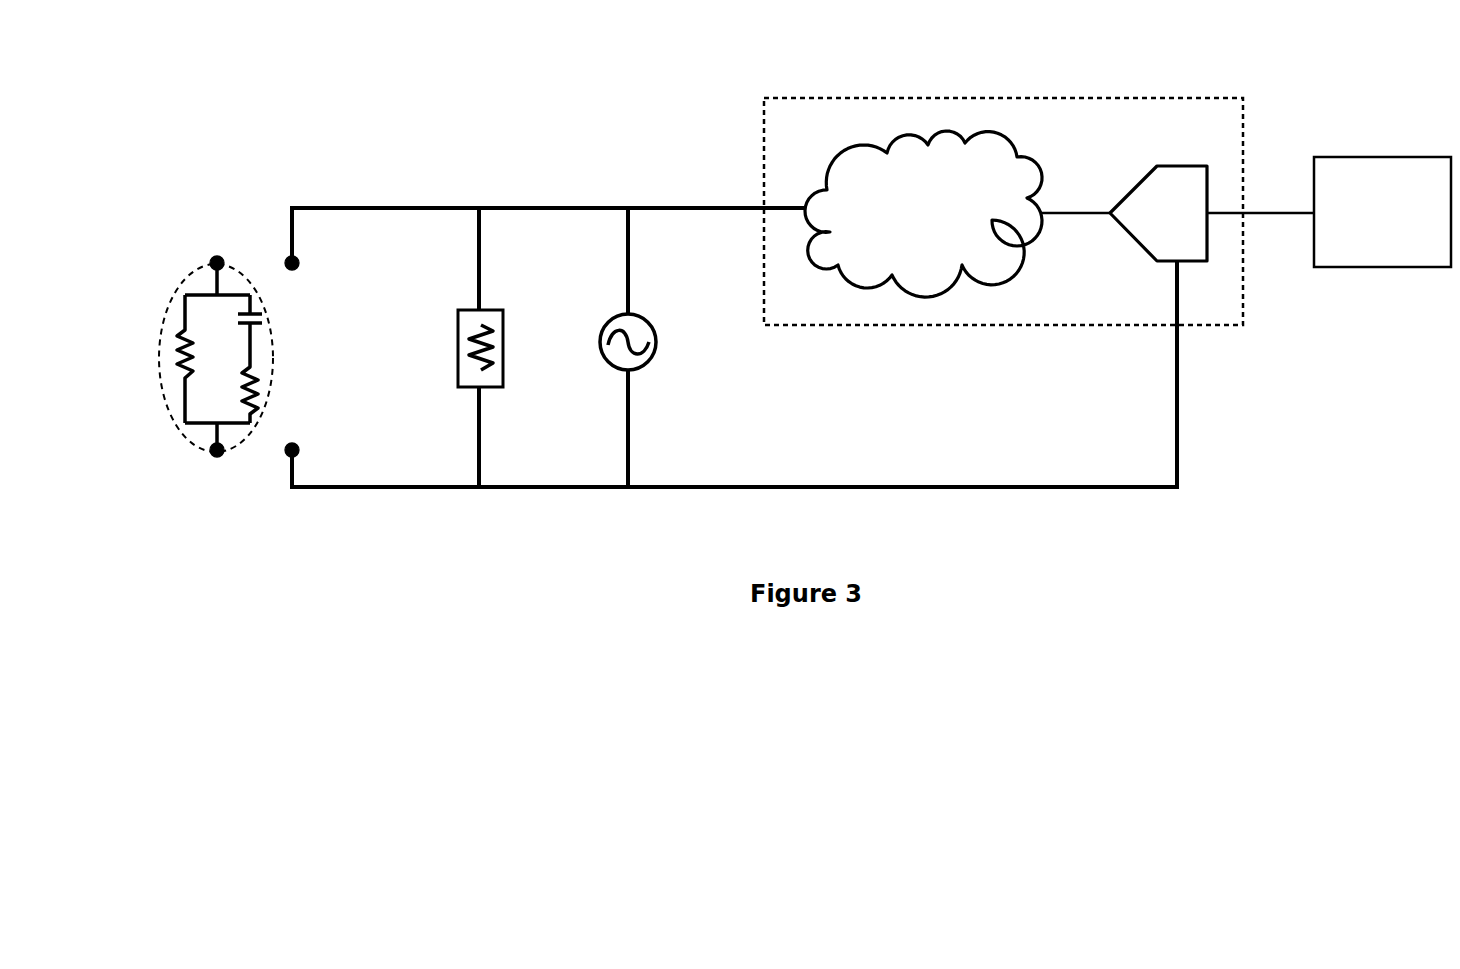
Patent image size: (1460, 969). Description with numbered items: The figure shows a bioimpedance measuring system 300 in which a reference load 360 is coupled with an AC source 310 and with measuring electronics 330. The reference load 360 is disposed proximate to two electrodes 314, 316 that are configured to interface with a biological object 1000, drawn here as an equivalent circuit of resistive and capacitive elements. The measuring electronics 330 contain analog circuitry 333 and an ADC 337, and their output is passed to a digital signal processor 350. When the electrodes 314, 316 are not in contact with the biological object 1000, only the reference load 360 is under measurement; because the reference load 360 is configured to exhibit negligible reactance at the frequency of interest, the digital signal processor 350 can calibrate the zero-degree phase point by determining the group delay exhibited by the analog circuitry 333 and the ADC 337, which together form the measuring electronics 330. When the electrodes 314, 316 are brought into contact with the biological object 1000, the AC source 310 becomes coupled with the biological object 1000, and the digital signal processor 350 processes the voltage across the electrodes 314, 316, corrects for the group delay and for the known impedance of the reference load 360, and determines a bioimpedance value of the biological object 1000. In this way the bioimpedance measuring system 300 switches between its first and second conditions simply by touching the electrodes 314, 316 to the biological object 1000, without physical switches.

The bioimpedance measuring system 300 is at (176, 84).
The electrode 314 is at (290, 228).
The electrode 316 is at (290, 465).
The biological object 1000 is at (166, 318).
The reference load 360 is at (457, 343).
The AC source 310 is at (611, 318).
The measuring electronics 330 is at (1081, 98).
The analog circuitry 333 is at (903, 214).
The ADC 337 is at (1123, 327).
The digital signal processor 350 is at (1329, 212).